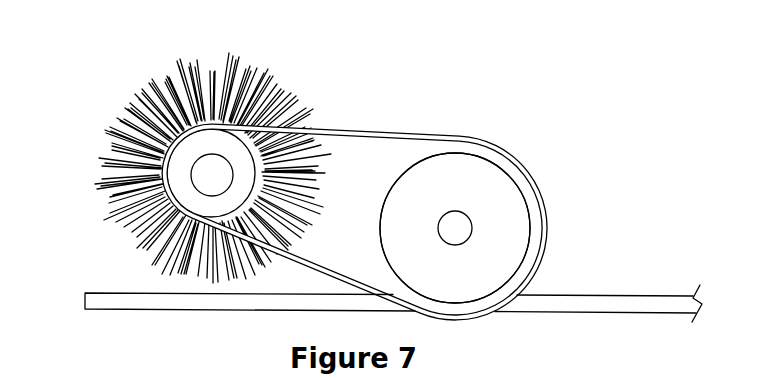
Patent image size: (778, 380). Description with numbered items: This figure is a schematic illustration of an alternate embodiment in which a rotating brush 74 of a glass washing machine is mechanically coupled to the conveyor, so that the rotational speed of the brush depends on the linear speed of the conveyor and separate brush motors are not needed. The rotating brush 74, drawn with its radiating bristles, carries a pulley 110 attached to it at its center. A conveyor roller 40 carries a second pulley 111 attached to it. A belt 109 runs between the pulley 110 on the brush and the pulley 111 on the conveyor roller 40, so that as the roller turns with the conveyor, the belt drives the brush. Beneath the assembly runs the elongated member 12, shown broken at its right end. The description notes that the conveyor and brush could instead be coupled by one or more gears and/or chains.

The rotating brush 74 is at (168, 63).
The pulley 110 is at (165, 193).
The belt 109 is at (352, 128).
The conveyor roller 40 is at (527, 167).
The pulley 111 is at (472, 303).
The rail 12 is at (607, 315).